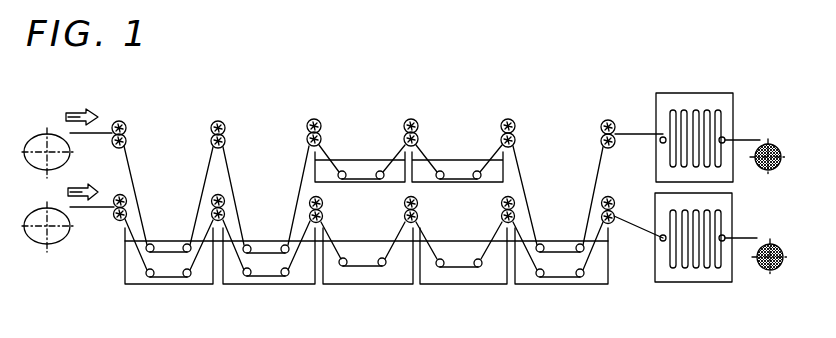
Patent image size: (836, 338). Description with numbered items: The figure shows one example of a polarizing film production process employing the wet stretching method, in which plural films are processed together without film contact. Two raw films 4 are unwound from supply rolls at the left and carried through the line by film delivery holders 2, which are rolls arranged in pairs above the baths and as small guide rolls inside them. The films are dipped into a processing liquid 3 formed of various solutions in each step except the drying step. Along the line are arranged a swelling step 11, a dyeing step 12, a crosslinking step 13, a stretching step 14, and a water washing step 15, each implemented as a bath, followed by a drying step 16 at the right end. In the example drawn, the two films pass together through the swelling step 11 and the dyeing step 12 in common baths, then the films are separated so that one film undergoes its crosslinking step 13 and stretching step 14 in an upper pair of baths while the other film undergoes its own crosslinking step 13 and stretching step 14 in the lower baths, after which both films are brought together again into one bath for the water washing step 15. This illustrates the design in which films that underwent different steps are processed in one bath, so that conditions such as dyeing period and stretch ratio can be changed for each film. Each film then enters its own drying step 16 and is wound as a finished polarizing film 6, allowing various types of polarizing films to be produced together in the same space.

The film delivery holder 2 is at (118, 121).
The processing liquid 3 is at (132, 276).
The raw film 4 is at (28, 166).
The polarizing film 6 is at (780, 169).
The swelling step (bath) 11 is at (170, 286).
The dyeing step (bath) 12 is at (273, 285).
The crosslinking step (bath) 13 is at (367, 285).
The stretching step (bath) 14 is at (460, 285).
The water washing step (bath) 15 is at (563, 285).
The drying step (bath) 16 is at (692, 93).